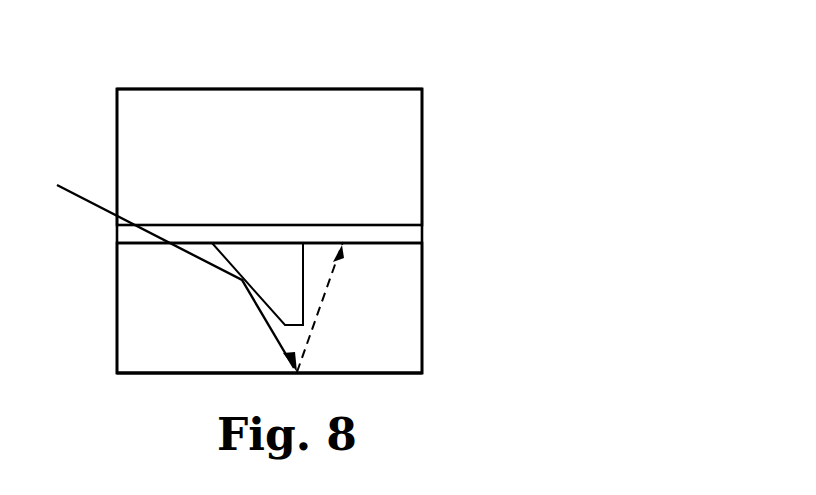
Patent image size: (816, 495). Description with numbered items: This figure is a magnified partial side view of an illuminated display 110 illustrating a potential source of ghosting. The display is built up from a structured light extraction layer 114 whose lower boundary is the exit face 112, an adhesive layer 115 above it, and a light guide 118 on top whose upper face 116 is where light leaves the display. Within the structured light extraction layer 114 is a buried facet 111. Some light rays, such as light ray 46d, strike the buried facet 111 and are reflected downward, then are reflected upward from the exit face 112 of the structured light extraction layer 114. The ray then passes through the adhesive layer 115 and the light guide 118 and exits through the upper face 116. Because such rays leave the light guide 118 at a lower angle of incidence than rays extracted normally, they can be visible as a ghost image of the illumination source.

The illuminated display 110 is at (411, 59).
The upper face 116 is at (280, 89).
The light guide 118 is at (393, 148).
The adhesive layer 115 is at (403, 233).
The structured light extraction layer 114 is at (410, 302).
The exit face 112 is at (172, 373).
The buried facet 111 is at (265, 300).
The light ray 46d is at (92, 200).